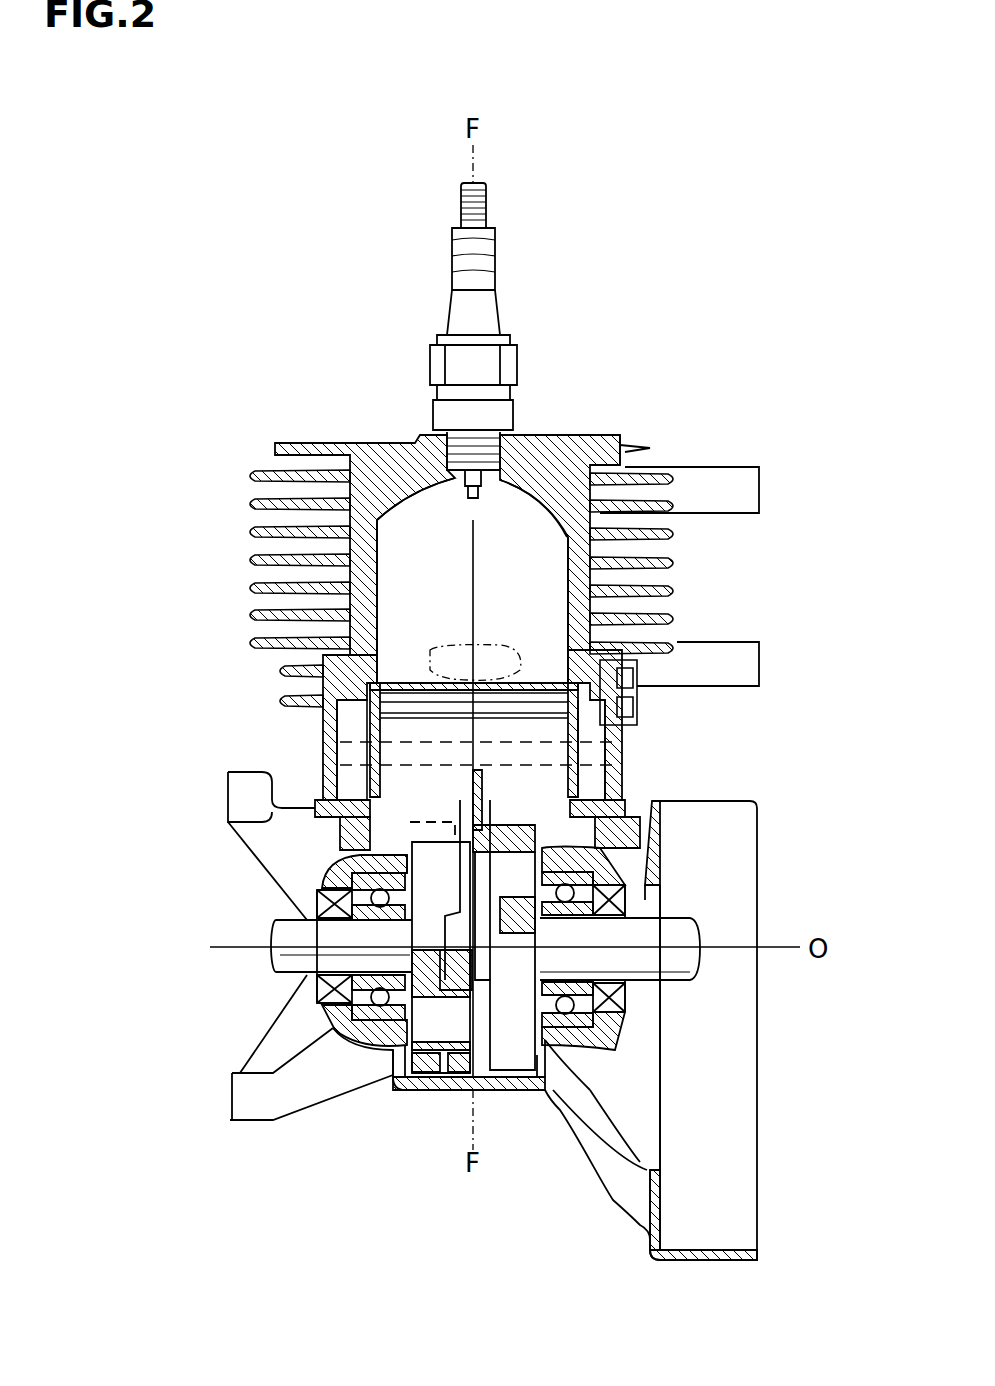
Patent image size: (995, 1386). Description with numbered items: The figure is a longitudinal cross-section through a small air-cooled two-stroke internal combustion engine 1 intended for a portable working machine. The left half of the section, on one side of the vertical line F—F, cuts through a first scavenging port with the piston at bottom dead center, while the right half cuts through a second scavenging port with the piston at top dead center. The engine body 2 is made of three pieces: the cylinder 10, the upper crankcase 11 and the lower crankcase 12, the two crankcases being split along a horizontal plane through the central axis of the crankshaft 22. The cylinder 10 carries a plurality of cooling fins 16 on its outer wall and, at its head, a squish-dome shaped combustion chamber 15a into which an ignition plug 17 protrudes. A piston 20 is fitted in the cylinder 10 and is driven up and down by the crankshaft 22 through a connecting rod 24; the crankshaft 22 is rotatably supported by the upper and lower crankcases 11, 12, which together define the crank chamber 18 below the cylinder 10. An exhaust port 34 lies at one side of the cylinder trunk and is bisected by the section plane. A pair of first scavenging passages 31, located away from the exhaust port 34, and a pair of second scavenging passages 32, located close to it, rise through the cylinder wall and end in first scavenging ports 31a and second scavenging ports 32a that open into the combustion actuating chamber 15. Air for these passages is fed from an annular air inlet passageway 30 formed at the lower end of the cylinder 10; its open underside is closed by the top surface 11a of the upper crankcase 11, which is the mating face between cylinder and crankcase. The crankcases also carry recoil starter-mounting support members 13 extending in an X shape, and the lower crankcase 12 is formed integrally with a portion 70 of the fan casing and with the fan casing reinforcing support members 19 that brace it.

The two-stroke internal combustion engine 1 is at (278, 322).
The engine body 2 is at (243, 496).
The cylinder 10 is at (618, 428).
The upper crankcase 11 is at (328, 866).
The top surface of the upper crankcase 11a is at (625, 800).
The lower crankcase 12 is at (366, 1042).
The recoil starter-mounting support members 13 is at (243, 790).
The combustion actuating chamber 15 is at (400, 560).
The combustion chamber 15a is at (500, 493).
The cooling fins 16 is at (690, 530).
The ignition plug 17 is at (446, 416).
The crank chamber 18 is at (480, 1057).
The fan casing reinforcing support members 19 is at (590, 1165).
The piston 20 is at (553, 596).
The crankshaft 22 is at (655, 932).
The connecting rod 24 is at (470, 868).
The annular air inlet passageway 30 is at (612, 780).
The first scavenging passages 31 is at (328, 708).
The first scavenging ports 31a is at (345, 656).
The second scavenging passages 32 is at (587, 725).
The second scavenging ports 32a is at (478, 687).
The exhaust port 34 is at (468, 652).
The portion of the fan casing 70 is at (712, 1260).